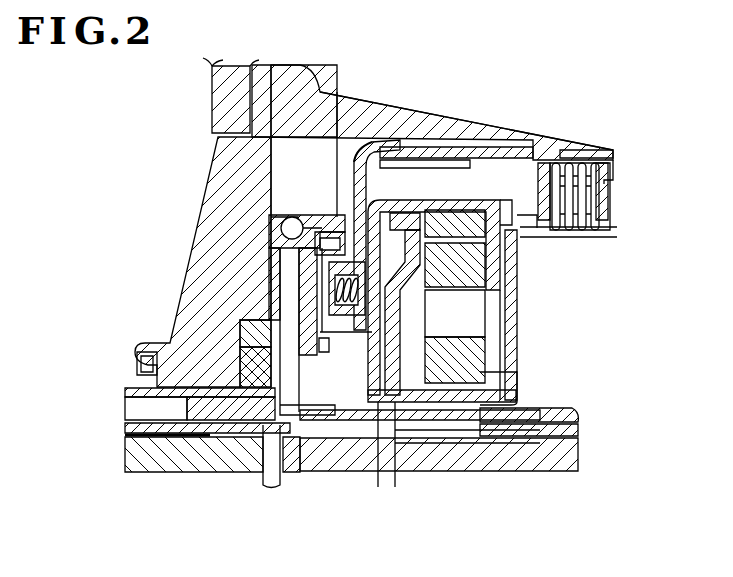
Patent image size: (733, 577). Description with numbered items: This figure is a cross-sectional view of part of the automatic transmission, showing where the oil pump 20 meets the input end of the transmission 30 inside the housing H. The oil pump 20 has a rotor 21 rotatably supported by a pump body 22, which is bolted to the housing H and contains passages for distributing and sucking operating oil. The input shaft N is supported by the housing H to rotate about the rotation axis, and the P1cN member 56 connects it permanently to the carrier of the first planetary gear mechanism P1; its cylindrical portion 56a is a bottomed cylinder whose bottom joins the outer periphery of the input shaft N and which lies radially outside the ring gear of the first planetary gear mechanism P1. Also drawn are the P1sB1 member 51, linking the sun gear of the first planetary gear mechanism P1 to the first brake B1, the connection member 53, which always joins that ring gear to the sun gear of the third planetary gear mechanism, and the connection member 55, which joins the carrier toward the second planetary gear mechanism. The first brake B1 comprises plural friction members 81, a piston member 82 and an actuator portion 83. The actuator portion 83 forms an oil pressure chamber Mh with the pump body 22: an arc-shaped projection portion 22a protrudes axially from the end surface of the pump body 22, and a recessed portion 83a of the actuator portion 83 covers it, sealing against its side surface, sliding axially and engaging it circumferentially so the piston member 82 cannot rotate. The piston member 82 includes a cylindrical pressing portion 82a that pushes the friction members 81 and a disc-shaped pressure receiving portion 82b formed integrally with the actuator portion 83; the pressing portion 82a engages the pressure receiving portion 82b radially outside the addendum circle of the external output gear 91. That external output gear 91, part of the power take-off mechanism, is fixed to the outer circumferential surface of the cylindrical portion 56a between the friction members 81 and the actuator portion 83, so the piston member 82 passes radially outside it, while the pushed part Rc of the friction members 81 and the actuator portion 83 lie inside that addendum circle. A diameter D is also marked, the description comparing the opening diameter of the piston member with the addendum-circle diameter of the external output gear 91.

The oil pump 20 is at (162, 325).
The rotor 21 is at (254, 375).
The pump body 22 is at (188, 372).
The projection portion 22a is at (320, 242).
The transmission 30 is at (522, 79).
The P1sB1 member 51 is at (517, 395).
The P1rP3s member 53 is at (522, 473).
The P1cP2r member 55 is at (580, 420).
The P1cN member 56 is at (376, 488).
The cylindrical portion 56a is at (374, 162).
The friction members 81 is at (546, 168).
The piston member 82 is at (463, 60).
The pressing portion 82a is at (428, 147).
The pressure receiving portion 82b is at (401, 140).
The actuator portion 83 is at (338, 216).
The recessed portion 83a is at (338, 230).
The external output gear 91 is at (467, 166).
The first brake B1 is at (612, 200).
The shaft D is at (292, 383).
The housing H is at (582, 140).
The oil pressure chamber Mh is at (335, 252).
The input shaft N is at (207, 462).
The first planetary gear mechanism P1 is at (455, 390).
The pushed part of the friction members Rc is at (537, 228).